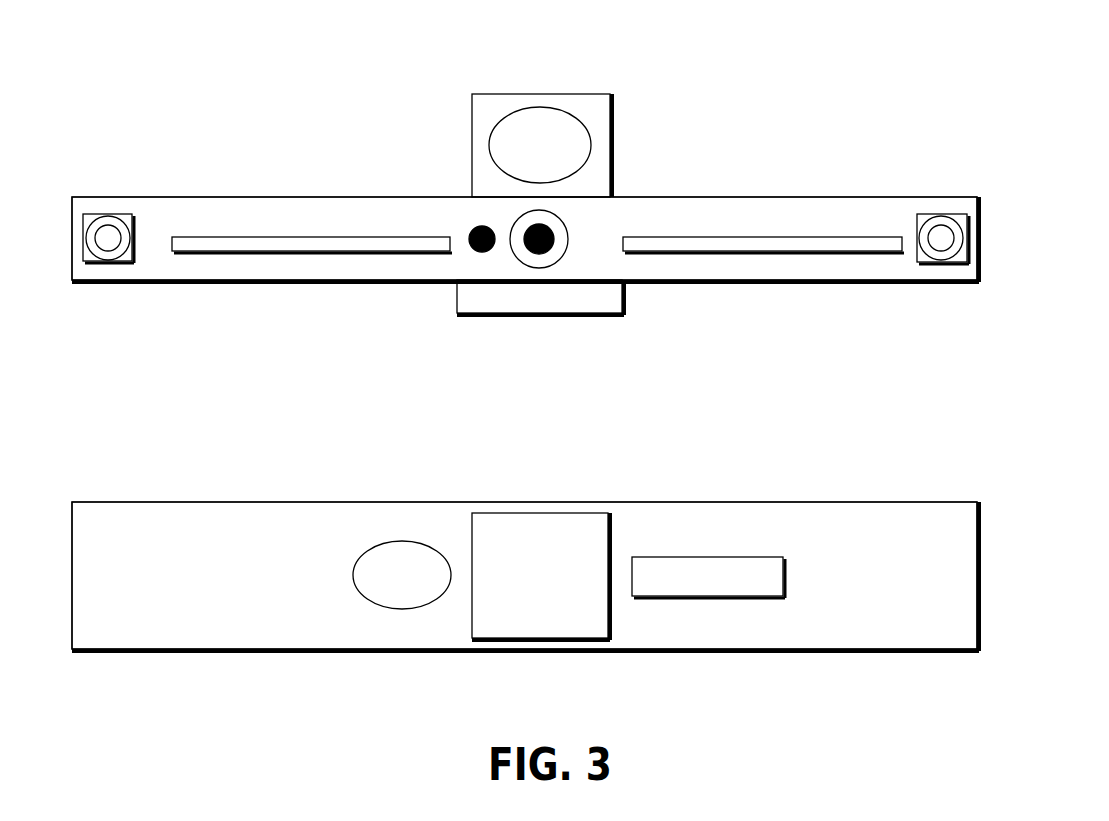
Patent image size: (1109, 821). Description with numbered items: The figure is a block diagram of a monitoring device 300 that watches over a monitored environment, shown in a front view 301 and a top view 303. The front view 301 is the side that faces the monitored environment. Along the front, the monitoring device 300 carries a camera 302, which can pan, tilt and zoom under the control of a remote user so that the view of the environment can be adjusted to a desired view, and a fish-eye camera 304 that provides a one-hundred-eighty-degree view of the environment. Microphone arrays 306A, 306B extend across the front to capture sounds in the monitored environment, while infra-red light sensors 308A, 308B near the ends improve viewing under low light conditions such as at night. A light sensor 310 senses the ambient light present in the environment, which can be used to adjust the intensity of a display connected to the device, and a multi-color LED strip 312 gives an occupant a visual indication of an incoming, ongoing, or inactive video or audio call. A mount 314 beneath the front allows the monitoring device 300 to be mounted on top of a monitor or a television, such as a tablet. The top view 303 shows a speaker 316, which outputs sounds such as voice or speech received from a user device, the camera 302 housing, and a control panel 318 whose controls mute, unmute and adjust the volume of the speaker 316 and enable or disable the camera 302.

The monitoring device 300 is at (119, 105).
The front view 301 is at (257, 151).
The camera 302 is at (505, 94).
The top view 303 is at (267, 486).
The fish-eye camera 304 is at (566, 222).
The microphone array 306A is at (203, 237).
The microphone array 306B is at (722, 237).
The infra-red light sensor 308A is at (97, 262).
The infra-red light sensor 308B is at (928, 263).
The light sensor 310 is at (470, 251).
The multi-color LED strip 312 is at (588, 158).
The mount 314 is at (510, 315).
The speaker 316 is at (392, 541).
The control panel 318 is at (683, 555).